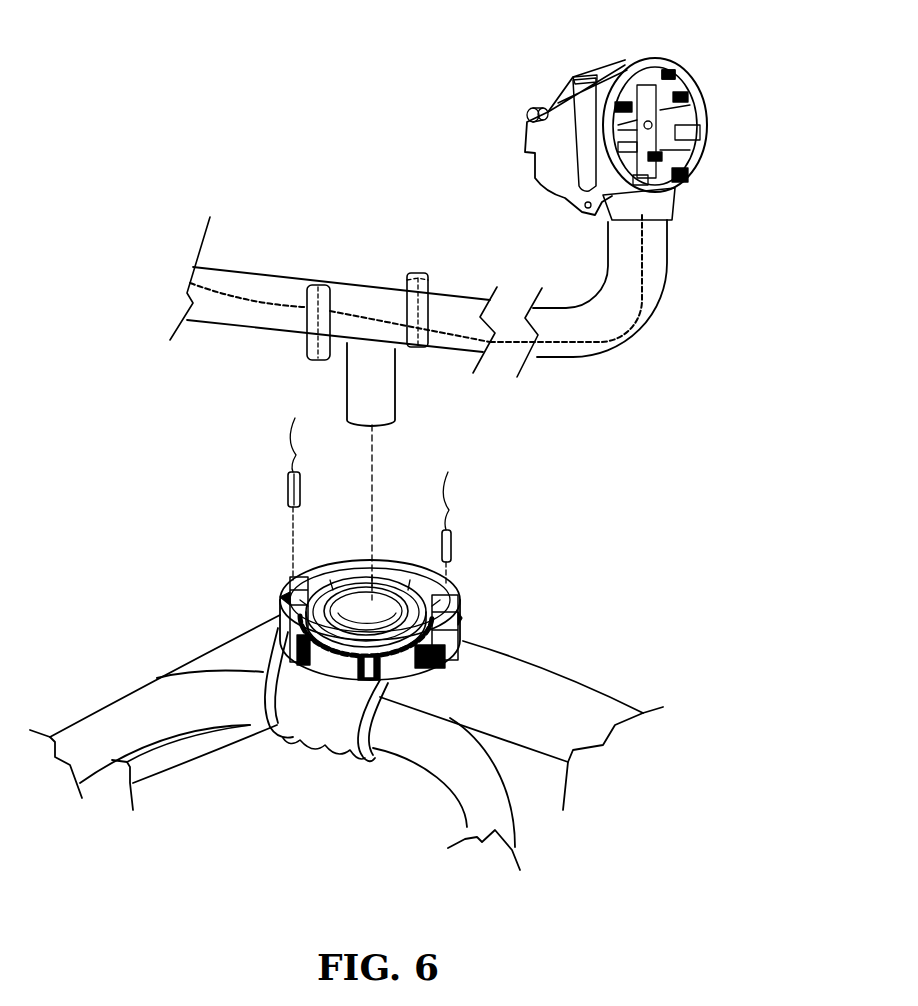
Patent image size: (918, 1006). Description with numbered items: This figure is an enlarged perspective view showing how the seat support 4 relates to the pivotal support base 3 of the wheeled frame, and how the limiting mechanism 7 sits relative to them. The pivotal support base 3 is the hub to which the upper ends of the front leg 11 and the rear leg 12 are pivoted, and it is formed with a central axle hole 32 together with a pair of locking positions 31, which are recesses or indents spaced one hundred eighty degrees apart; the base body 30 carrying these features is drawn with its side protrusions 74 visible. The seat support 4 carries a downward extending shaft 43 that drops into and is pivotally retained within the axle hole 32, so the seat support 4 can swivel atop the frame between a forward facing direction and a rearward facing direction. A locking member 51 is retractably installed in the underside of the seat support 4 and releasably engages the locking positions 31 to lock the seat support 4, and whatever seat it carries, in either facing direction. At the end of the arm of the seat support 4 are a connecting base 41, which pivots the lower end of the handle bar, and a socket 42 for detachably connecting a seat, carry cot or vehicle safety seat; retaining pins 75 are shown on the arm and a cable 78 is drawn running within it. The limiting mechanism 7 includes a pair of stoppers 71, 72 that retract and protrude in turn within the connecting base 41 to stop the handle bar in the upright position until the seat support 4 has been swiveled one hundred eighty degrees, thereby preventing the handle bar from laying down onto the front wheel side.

The pivotal support base 3 is at (391, 604).
The seat support 4 is at (637, 313).
The limiting mechanism 7 is at (710, 127).
The front leg 11 is at (128, 708).
The rear leg 12 is at (582, 703).
The mounting base 30 is at (345, 547).
The locking positions 31 is at (283, 570).
The axle hole 32 is at (380, 617).
The connecting base 41 is at (668, 200).
The socket 42 is at (558, 105).
The downward extending shaft 43 is at (380, 400).
The locking member 51 is at (290, 488).
The stopper 71 is at (628, 80).
The stopper 72 is at (677, 75).
The protrusions 74 is at (280, 597).
The retaining pins 75 is at (410, 277).
The cable 78 is at (250, 297).